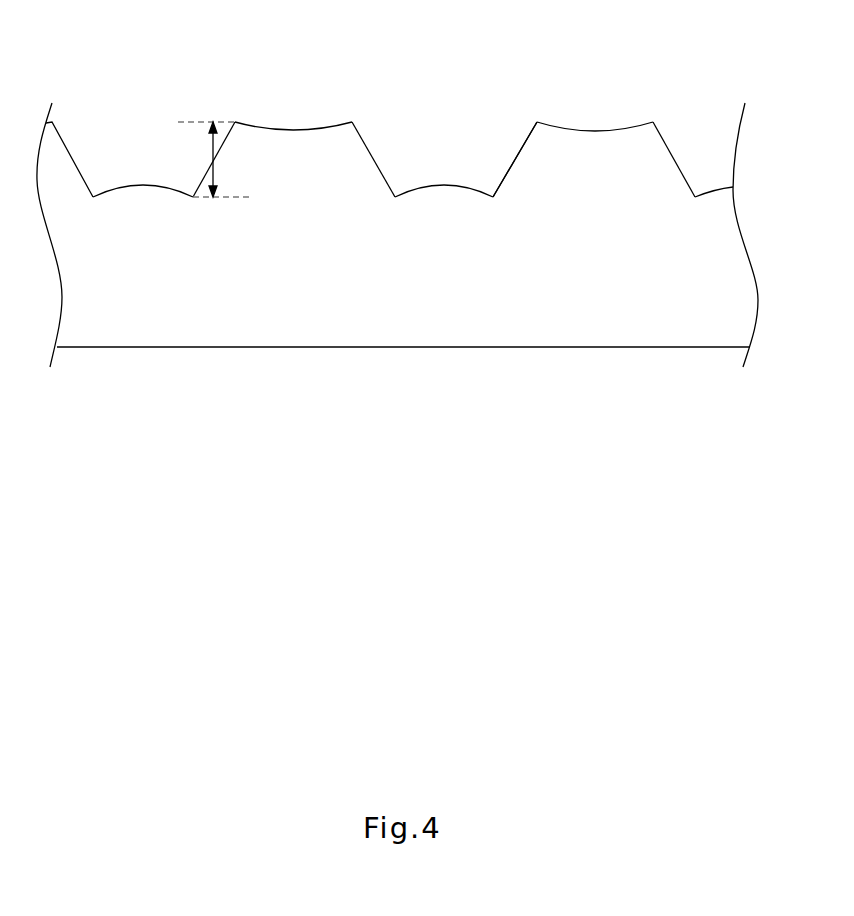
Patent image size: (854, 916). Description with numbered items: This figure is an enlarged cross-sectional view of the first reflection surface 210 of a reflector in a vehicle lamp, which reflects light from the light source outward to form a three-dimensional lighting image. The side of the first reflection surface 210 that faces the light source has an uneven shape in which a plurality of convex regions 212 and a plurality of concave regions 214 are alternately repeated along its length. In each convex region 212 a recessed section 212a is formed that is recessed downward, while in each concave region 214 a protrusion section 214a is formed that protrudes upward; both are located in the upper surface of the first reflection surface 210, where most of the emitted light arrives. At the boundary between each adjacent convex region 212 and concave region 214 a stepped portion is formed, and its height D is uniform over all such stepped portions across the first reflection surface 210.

The first reflection surface 210 is at (298, 312).
The convex region 212 is at (257, 104).
The recessed section 212a is at (292, 130).
The concave region 214 is at (410, 162).
The protrusion section 214a is at (142, 183).
The height of stepped portion D is at (215, 169).